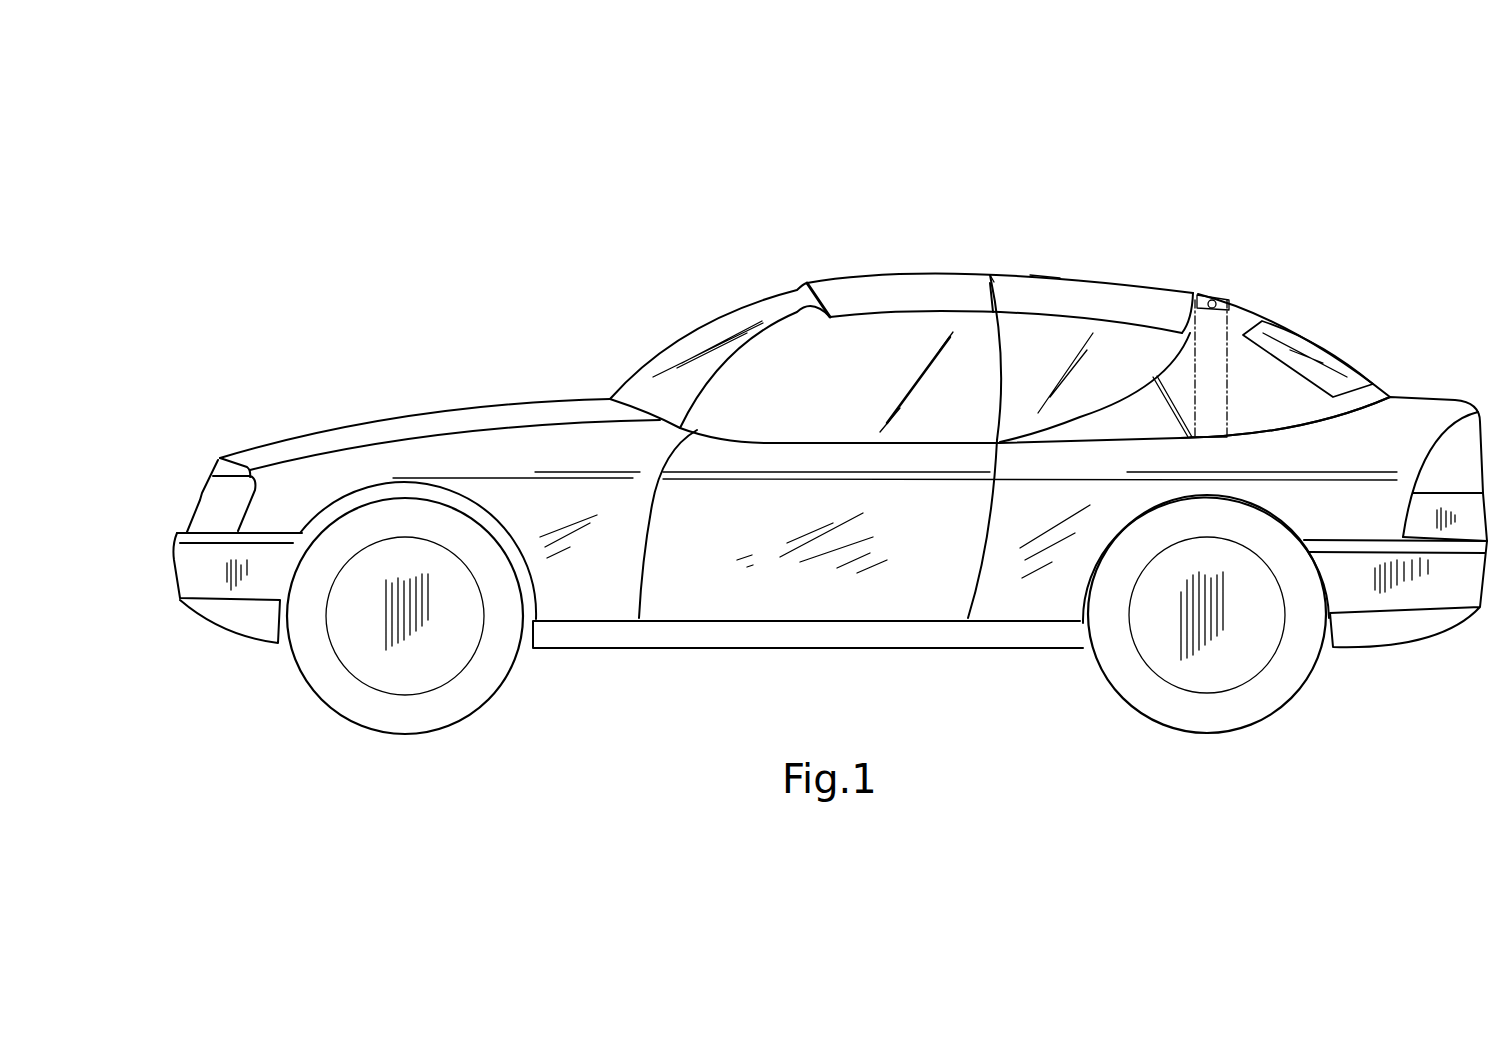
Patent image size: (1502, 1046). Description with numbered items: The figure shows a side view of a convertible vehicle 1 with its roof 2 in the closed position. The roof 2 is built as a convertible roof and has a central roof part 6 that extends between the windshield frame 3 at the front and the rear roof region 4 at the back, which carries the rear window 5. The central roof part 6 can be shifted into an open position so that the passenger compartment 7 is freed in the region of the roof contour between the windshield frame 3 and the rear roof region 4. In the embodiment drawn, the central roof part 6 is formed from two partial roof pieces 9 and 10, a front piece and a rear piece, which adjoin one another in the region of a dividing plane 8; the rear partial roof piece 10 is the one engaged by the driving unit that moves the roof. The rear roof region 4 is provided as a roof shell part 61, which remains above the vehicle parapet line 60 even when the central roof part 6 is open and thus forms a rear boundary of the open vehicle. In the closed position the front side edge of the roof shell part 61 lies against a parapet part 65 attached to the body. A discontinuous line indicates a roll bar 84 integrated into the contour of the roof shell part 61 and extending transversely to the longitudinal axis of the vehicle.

The vehicle 1 is at (682, 140).
The roof 2 is at (1318, 168).
The windshield frame 3 is at (782, 280).
The rear roof region 4 is at (1263, 303).
The rear window 5 is at (1343, 377).
The central roof part 6 is at (1053, 267).
The passenger compartment 7 is at (868, 382).
The dividing plane 8 is at (997, 280).
The partial roof piece 9 is at (902, 280).
The partial roof piece 10 is at (1122, 295).
The vehicle parapet line 60 is at (1283, 432).
The roof shell part 61 is at (1268, 410).
The parapet part 65 is at (1127, 435).
The roll bar 84 is at (1223, 333).